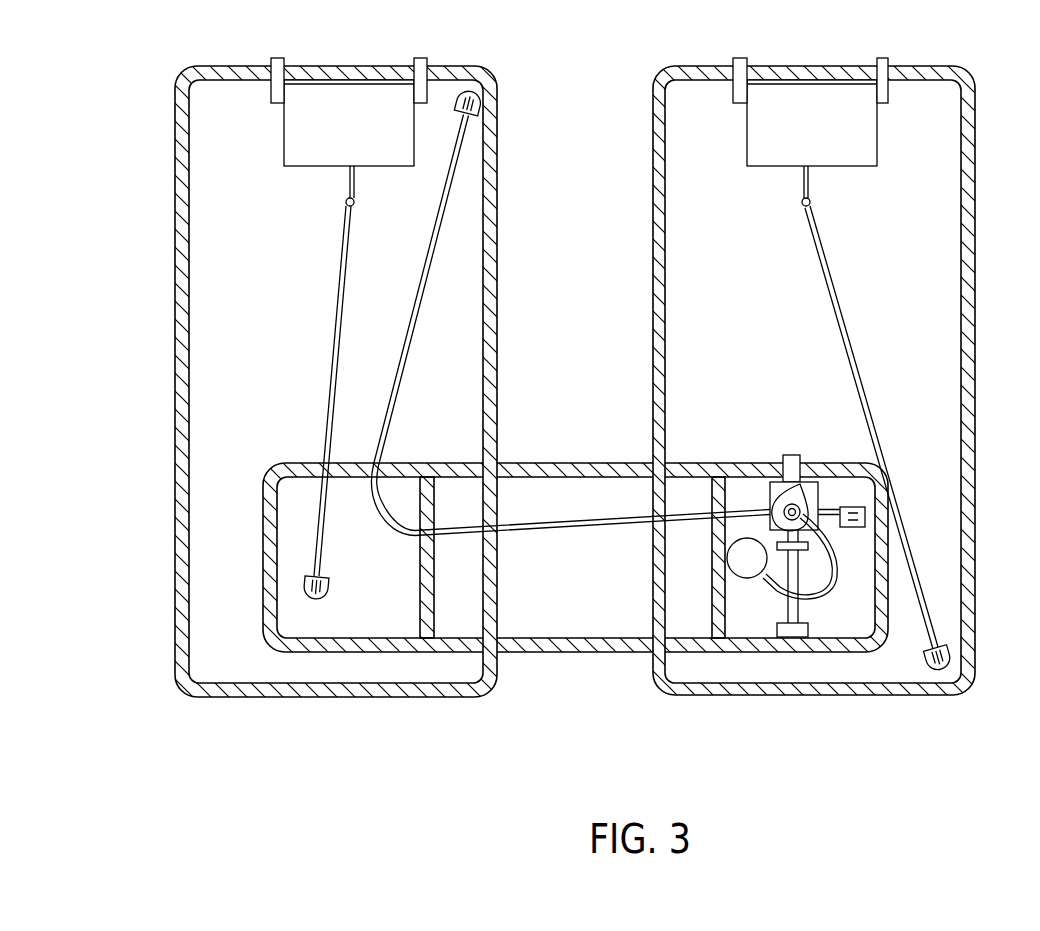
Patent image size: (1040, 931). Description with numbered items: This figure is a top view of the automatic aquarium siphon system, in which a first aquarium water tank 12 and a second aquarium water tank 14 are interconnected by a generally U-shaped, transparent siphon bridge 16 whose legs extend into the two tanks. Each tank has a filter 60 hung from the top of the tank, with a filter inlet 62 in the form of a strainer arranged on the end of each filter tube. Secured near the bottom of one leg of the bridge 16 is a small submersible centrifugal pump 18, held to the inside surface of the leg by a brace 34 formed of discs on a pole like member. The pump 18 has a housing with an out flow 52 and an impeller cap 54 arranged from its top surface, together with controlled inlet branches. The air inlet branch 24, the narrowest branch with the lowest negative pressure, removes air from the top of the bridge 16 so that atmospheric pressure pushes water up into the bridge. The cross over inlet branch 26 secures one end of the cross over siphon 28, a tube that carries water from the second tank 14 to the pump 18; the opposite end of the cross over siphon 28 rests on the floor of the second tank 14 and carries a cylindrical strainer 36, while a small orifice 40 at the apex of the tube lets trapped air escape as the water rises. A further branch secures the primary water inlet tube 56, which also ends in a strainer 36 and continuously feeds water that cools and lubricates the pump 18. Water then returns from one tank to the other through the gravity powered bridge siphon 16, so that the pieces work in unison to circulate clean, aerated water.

The first aquarium water tank 12 is at (915, 92).
The second aquarium water tank 14 is at (207, 93).
The siphon bridge 16 is at (608, 655).
The submersible pump 18 is at (860, 481).
The air inlet branch 24 is at (882, 562).
The cross over inlet branch 26 is at (776, 497).
The cross over siphon 28 is at (410, 348).
The brace 34 is at (776, 600).
The strainer 36 is at (483, 108).
The orifice 40 is at (583, 522).
The out flow 52 is at (797, 457).
The impeller cap 54 is at (806, 483).
The primary water inlet tube 56 is at (868, 517).
The filter 60 is at (350, 82).
The filter inlet 62 is at (303, 585).